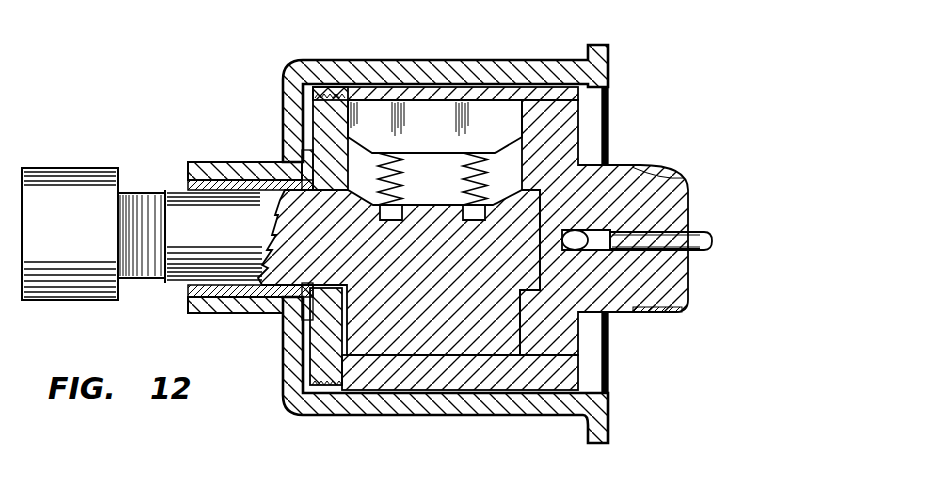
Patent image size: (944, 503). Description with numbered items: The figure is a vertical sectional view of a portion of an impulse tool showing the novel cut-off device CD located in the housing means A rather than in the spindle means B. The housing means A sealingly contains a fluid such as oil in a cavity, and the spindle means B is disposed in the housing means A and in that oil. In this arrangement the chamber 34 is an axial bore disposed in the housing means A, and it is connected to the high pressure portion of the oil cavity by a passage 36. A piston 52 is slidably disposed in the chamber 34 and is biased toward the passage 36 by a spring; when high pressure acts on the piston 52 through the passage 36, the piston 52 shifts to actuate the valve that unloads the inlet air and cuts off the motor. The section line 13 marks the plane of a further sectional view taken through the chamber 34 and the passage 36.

The housing means A is at (406, 62).
The spindle means B is at (464, 390).
The cut-off device CD is at (578, 258).
The chamber 34 is at (605, 235).
The passage 36 is at (575, 229).
The piston 52 is at (703, 232).
The section line 13- 13 is at (743, 240).